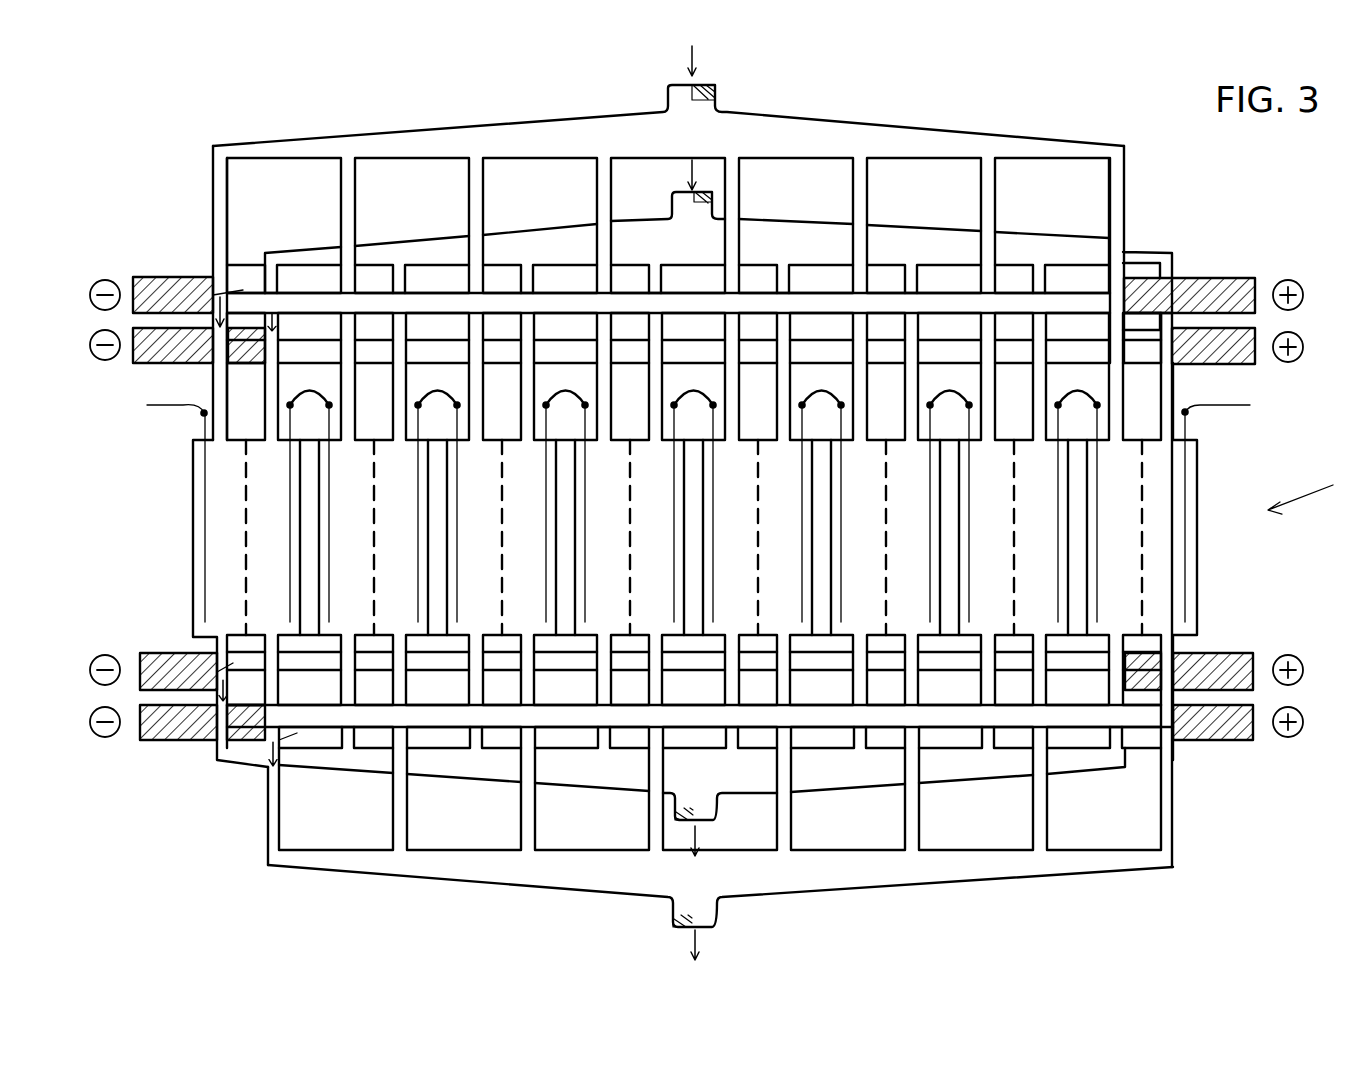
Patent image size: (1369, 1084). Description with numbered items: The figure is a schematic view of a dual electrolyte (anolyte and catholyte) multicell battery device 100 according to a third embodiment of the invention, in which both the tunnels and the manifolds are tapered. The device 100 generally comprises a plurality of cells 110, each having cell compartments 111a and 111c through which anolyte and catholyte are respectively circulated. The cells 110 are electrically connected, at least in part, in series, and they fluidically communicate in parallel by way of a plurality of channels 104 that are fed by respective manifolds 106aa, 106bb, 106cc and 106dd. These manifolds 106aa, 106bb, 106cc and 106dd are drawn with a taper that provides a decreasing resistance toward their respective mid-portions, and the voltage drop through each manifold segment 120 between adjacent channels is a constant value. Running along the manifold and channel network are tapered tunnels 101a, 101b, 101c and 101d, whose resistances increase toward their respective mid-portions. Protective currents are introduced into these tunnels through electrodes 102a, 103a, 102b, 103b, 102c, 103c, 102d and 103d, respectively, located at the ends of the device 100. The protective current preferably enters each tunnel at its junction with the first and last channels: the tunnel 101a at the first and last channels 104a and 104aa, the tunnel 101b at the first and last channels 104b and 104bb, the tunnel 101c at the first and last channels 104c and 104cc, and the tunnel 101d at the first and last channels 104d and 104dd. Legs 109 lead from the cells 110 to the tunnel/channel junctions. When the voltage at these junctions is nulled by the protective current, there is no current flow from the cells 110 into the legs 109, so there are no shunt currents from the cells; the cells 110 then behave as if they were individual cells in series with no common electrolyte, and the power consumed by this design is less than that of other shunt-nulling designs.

The dual electrolyte multicell battery device 100 is at (1318, 493).
The tapered tunnel 101a is at (247, 288).
The tapered tunnel 101b is at (277, 358).
The tapered tunnel 101c is at (233, 663).
The tapered tunnel 101d is at (297, 735).
The electrode 102a is at (165, 279).
The electrode 102b is at (167, 365).
The electrode 102c is at (168, 653).
The electrode 102d is at (175, 740).
The electrode 103a is at (1216, 279).
The electrode 103b is at (1222, 363).
The electrode 103c is at (1217, 653).
The electrode 103d is at (1216, 740).
The channel 104 is at (470, 176).
The first channel 104a is at (213, 190).
The last channel 104aa is at (1124, 225).
The first channel 104b is at (279, 395).
The last channel 104bb is at (1176, 400).
The first channel 104c is at (217, 757).
The last channel 104cc is at (1128, 752).
The first channel 104d is at (265, 848).
The last channel 104dd is at (1168, 815).
The tapered manifold 106aa is at (865, 128).
The tapered manifold 106bb is at (887, 238).
The tapered manifold 106cc is at (1000, 772).
The tapered manifold 106dd is at (874, 880).
The leg 109 is at (601, 391).
The cell 110 is at (344, 517).
The cell compartment 111a is at (216, 549).
The cell compartment 111c is at (260, 467).
The manifold segment 120 is at (445, 233).